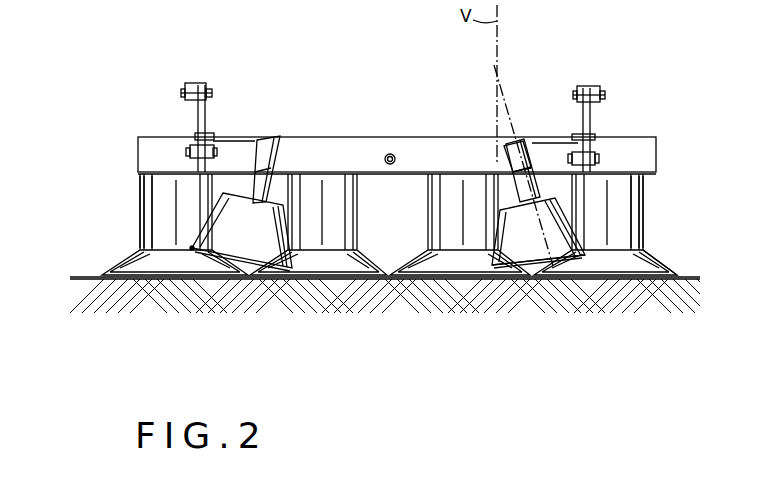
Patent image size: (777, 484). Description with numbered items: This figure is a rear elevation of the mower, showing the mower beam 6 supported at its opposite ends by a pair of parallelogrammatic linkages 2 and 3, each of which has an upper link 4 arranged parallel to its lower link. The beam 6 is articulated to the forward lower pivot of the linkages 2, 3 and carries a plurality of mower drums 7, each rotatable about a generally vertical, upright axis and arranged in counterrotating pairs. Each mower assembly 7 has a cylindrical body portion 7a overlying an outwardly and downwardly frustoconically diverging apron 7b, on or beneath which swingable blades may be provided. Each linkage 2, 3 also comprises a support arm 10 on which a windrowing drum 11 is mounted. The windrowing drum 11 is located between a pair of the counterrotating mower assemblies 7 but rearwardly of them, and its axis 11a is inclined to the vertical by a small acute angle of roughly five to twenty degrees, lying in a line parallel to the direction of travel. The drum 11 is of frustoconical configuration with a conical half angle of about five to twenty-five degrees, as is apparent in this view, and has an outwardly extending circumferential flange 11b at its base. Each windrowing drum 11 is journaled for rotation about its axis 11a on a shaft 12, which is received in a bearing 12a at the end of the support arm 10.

The parallelogrammatic linkage 2 is at (574, 118).
The parallelogrammatic linkage 3 is at (188, 102).
The upper link 4 is at (206, 103).
The mower beam 6 is at (425, 152).
The mower drum 7 is at (128, 198).
The cylindrical body portion 7a is at (153, 228).
The apron 7b is at (634, 262).
The support arm 10 is at (231, 149).
The windrowing drum 11 is at (249, 242).
The axis 11a is at (497, 82).
The circumferential flange 11b is at (536, 263).
The shaft 12 is at (290, 182).
The bearing 12a is at (505, 157).